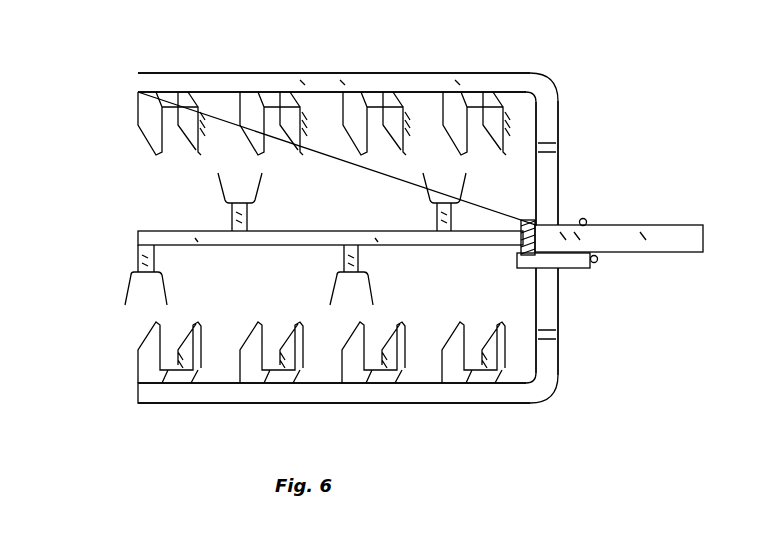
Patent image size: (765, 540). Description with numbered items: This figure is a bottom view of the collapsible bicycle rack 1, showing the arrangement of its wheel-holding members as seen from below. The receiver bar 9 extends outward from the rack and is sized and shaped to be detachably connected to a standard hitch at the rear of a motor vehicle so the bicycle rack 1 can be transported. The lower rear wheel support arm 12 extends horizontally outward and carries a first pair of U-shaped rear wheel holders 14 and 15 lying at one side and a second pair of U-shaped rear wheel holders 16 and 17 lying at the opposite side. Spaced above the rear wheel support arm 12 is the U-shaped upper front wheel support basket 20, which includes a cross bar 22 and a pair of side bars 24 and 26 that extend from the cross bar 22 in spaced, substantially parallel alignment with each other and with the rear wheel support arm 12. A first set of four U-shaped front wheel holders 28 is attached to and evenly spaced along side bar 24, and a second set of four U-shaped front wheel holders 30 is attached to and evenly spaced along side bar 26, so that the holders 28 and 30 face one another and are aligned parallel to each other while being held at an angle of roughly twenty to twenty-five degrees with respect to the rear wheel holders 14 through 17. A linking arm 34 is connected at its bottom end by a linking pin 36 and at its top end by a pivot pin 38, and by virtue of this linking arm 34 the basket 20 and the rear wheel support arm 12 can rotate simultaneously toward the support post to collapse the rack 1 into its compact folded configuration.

The collapsible bicycle rack 1 is at (96, 205).
The receiver bar 9 is at (677, 228).
The lower rear wheel support arm 12 is at (337, 231).
The U-shaped rear wheel holder 14 is at (222, 183).
The U-shaped rear wheel holder 15 is at (463, 180).
The U-shaped rear wheel holder 16 is at (128, 282).
The U-shaped rear wheel holder 17 is at (371, 282).
The U-shaped upper front wheel support basket 20 is at (566, 120).
The cross bar 22 is at (552, 185).
The side bar 24 is at (438, 396).
The side bar 26 is at (384, 73).
The U-shaped front wheel holders 28 is at (148, 365).
The U-shaped front wheel holders 30 is at (203, 128).
The linking arm 34 is at (561, 270).
The linking pin 36 is at (590, 270).
The pivot pin 38 is at (520, 245).